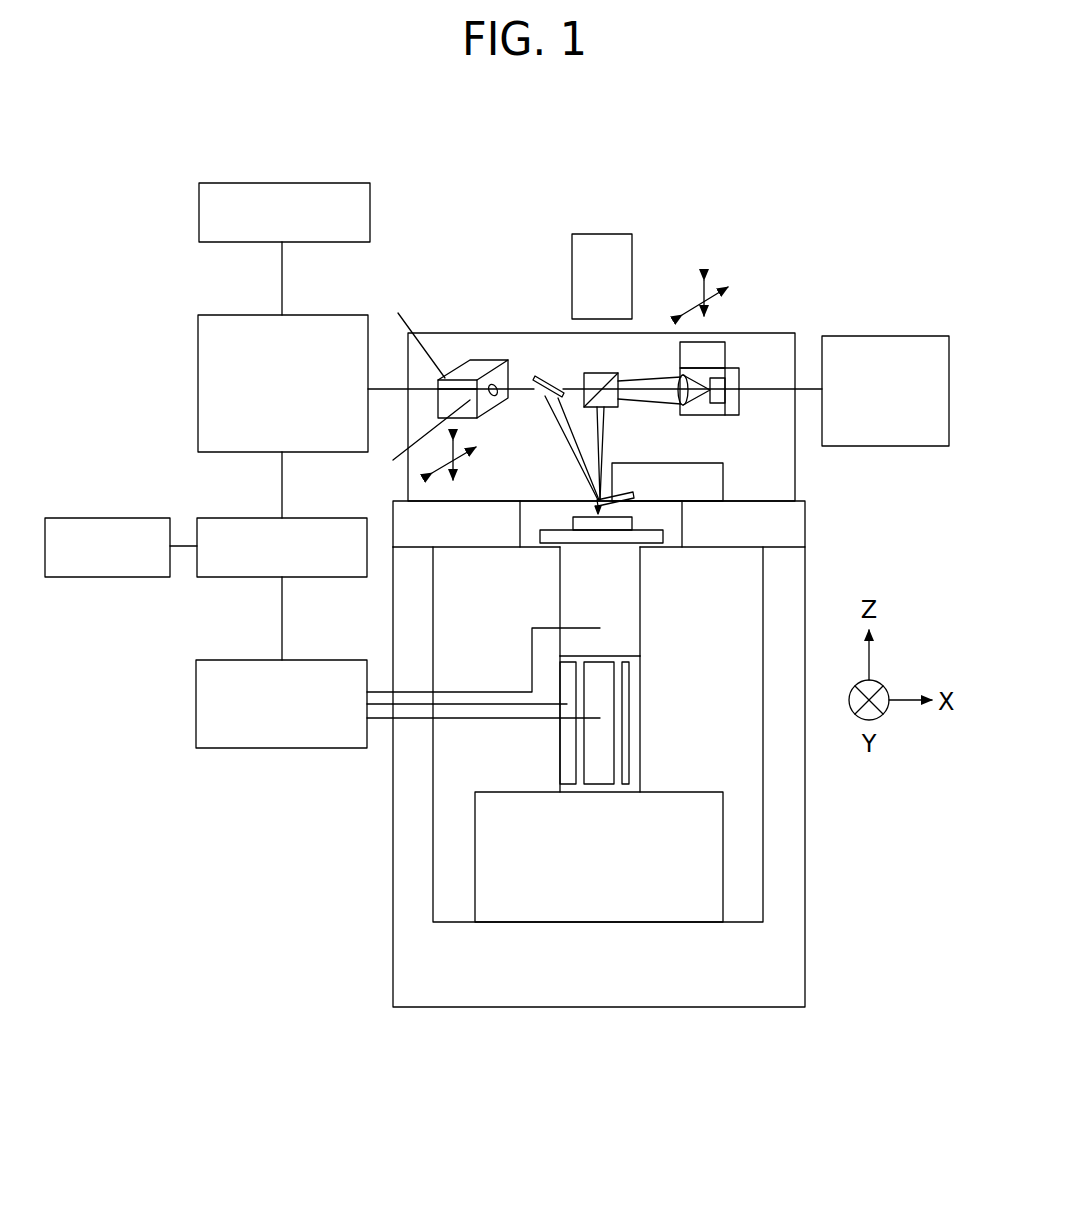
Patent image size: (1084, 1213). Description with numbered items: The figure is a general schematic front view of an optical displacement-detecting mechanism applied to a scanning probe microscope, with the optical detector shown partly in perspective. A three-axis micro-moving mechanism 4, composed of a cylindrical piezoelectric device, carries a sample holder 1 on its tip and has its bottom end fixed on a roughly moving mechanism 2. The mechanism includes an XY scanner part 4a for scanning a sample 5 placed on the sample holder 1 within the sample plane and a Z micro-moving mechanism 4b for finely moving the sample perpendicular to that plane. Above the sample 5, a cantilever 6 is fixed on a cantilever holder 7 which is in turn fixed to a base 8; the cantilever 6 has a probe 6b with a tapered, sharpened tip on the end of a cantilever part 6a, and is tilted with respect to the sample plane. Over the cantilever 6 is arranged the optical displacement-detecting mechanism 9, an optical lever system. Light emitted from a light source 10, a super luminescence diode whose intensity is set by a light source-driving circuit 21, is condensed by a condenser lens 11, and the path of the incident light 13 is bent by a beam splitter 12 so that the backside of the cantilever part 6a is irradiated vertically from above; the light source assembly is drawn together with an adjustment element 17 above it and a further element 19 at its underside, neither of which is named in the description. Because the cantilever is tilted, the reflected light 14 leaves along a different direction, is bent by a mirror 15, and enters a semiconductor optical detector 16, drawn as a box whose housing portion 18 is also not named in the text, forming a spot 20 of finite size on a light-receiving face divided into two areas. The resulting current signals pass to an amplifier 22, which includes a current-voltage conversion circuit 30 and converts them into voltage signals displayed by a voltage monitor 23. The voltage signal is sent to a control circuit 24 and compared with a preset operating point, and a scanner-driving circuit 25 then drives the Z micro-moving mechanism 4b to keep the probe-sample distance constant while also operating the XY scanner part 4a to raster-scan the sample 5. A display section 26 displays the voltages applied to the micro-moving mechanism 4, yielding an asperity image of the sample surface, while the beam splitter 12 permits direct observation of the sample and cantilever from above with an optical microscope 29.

The sample holder 1 is at (553, 548).
The roughly moving mechanism 2 is at (708, 845).
The three-axis micro-moving mechanism 4 is at (637, 663).
The XY scanner part 4a is at (630, 747).
The Z micro-moving mechanism 4b is at (623, 602).
The sample 5 is at (640, 540).
The cantilever 6 is at (596, 467).
The cantilever part 6a is at (592, 493).
The probe 6b is at (565, 510).
The cantilever holder 7 is at (713, 483).
The base 8 is at (778, 527).
The optical displacement-detecting mechanism 9 is at (678, 268).
The light source 10 is at (733, 387).
The condenser lens 11 is at (683, 380).
The beam splitter 12 is at (597, 376).
The incident light 13 is at (605, 423).
The reflected light 14 is at (562, 420).
The mirror 15 is at (547, 377).
The optical detector 16 is at (470, 387).
The light source adjustment mechanism 17 is at (712, 353).
The photodetector housing 18 is at (480, 358).
The light emitting element 19 is at (717, 413).
The spot 20 is at (433, 392).
The light source-driving circuit 21 is at (903, 335).
The amplifier 22 is at (217, 453).
The voltage monitor 23 is at (217, 244).
The control circuit 24 is at (216, 578).
The scanner-driving circuit 25 is at (216, 749).
The display section 26 is at (118, 578).
The optical microscope 29 is at (600, 233).
The current-voltage conversion circuit 30 is at (622, 992).